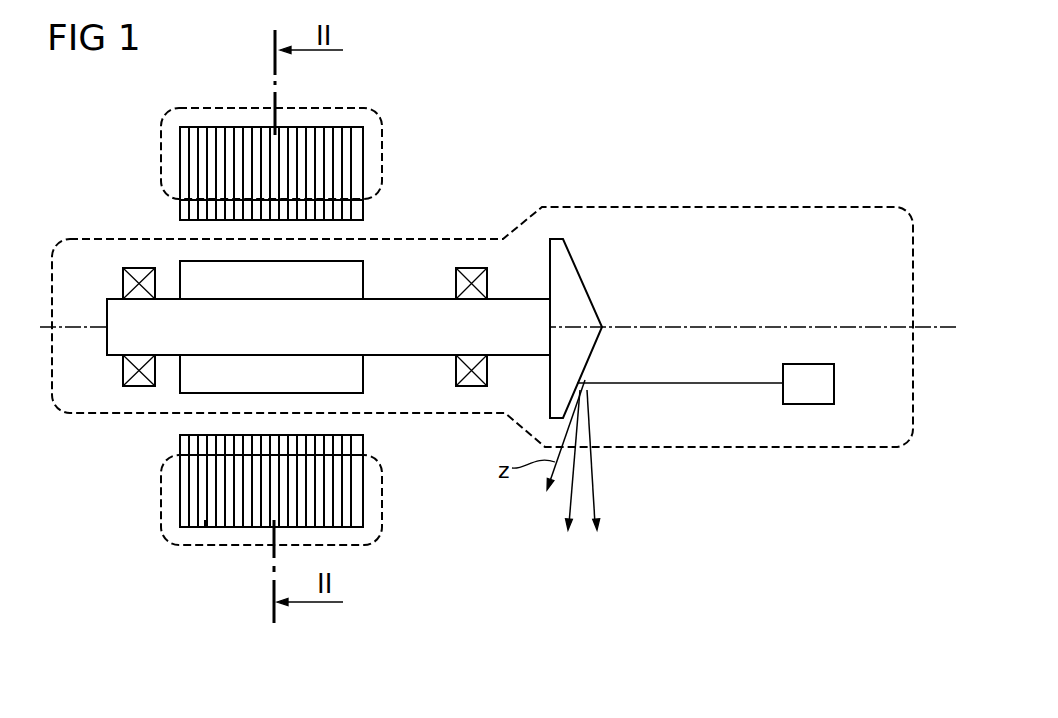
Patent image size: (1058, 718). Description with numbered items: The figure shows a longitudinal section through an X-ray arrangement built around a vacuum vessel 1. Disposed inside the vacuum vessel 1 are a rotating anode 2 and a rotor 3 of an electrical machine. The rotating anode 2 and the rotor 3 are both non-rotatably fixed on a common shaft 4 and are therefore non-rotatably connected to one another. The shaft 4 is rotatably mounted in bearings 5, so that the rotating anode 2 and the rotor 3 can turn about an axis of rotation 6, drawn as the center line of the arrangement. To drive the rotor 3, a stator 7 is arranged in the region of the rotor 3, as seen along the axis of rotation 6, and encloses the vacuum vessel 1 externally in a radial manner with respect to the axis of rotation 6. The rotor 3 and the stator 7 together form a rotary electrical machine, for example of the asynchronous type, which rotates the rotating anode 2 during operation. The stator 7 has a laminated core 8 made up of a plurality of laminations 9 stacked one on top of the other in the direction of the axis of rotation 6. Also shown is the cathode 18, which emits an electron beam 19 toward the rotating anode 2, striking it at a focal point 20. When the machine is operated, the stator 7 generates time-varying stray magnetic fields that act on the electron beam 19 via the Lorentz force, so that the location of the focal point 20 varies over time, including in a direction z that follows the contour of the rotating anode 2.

The vacuum vessel 1 is at (655, 207).
The rotating anode 2 is at (562, 239).
The rotor 3 is at (350, 261).
The shaft 4 is at (418, 299).
The bearings 5 is at (137, 268).
The axis of rotation 6 is at (945, 326).
The stator 7 is at (376, 82).
The laminated core 8 is at (180, 160).
The laminations 9 is at (205, 527).
The cathode 18 is at (800, 404).
The electron beam 19 is at (712, 383).
The focal point 20 is at (578, 386).